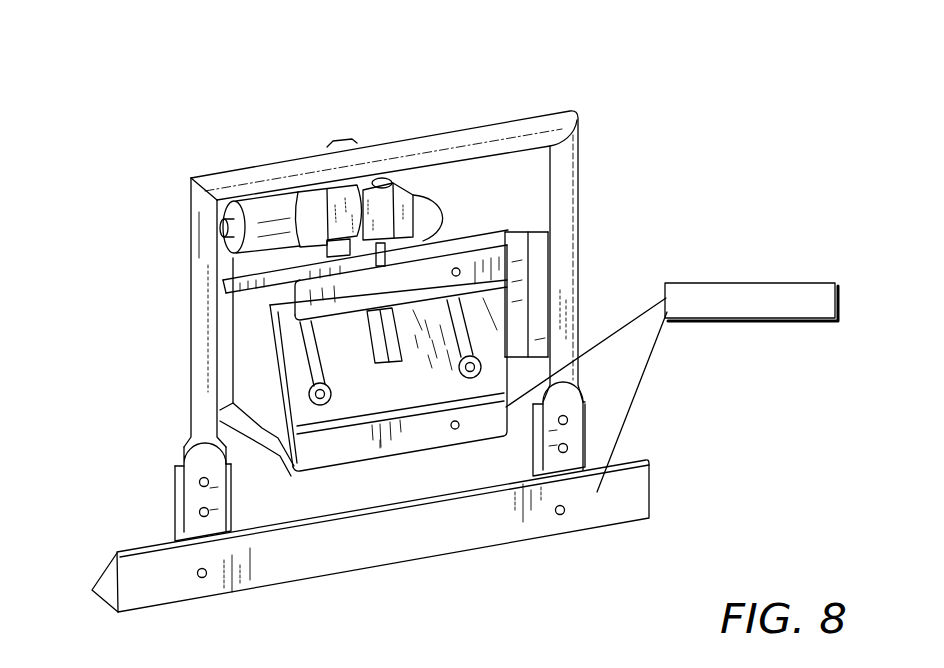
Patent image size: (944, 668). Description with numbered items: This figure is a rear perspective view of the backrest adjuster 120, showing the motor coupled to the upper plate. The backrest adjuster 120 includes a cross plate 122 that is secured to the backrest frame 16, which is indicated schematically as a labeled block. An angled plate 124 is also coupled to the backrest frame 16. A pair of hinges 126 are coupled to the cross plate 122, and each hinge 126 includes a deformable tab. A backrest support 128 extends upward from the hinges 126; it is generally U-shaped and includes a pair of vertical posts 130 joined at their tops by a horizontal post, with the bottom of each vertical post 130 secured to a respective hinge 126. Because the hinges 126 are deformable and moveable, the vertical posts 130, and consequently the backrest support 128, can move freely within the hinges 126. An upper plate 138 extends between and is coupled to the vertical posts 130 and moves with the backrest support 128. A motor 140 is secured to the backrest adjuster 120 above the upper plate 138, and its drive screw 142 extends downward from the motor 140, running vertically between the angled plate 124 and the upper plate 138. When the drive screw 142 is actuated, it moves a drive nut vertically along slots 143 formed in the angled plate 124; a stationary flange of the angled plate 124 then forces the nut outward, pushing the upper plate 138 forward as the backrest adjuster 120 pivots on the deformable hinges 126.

The backrest frame 16 is at (752, 283).
The backrest adjuster 120 is at (607, 93).
The cross plate 122 is at (617, 510).
The angled plate 124 is at (337, 447).
The hinges 126 is at (571, 418).
The backrest support 128 is at (200, 222).
The vertical posts 130 is at (497, 138).
The upper plate 138 is at (537, 268).
The motor 140 is at (312, 192).
The drive screw 142 is at (415, 235).
The slots 143 is at (500, 360).